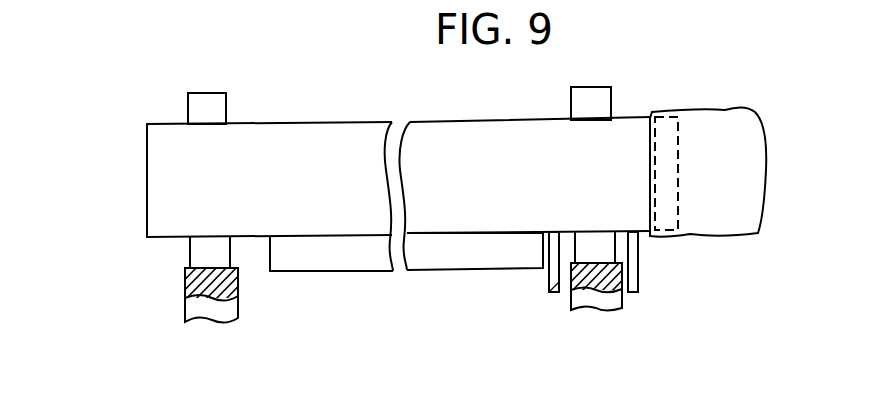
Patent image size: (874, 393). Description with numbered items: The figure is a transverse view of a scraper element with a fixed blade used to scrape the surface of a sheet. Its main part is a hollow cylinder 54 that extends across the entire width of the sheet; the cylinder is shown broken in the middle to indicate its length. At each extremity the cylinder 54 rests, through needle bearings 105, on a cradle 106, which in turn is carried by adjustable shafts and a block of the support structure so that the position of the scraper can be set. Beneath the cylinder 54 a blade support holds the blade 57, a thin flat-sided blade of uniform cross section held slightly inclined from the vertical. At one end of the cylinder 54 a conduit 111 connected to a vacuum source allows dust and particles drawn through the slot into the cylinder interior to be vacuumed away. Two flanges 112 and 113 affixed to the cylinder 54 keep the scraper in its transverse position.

The hollow cylinder 54 is at (460, 147).
The blade 57 is at (362, 260).
The needle bearings 105 is at (206, 104).
The cradle 106 is at (226, 305).
The conduit 111 is at (730, 130).
The flange 112 is at (551, 287).
The flange 113 is at (691, 290).